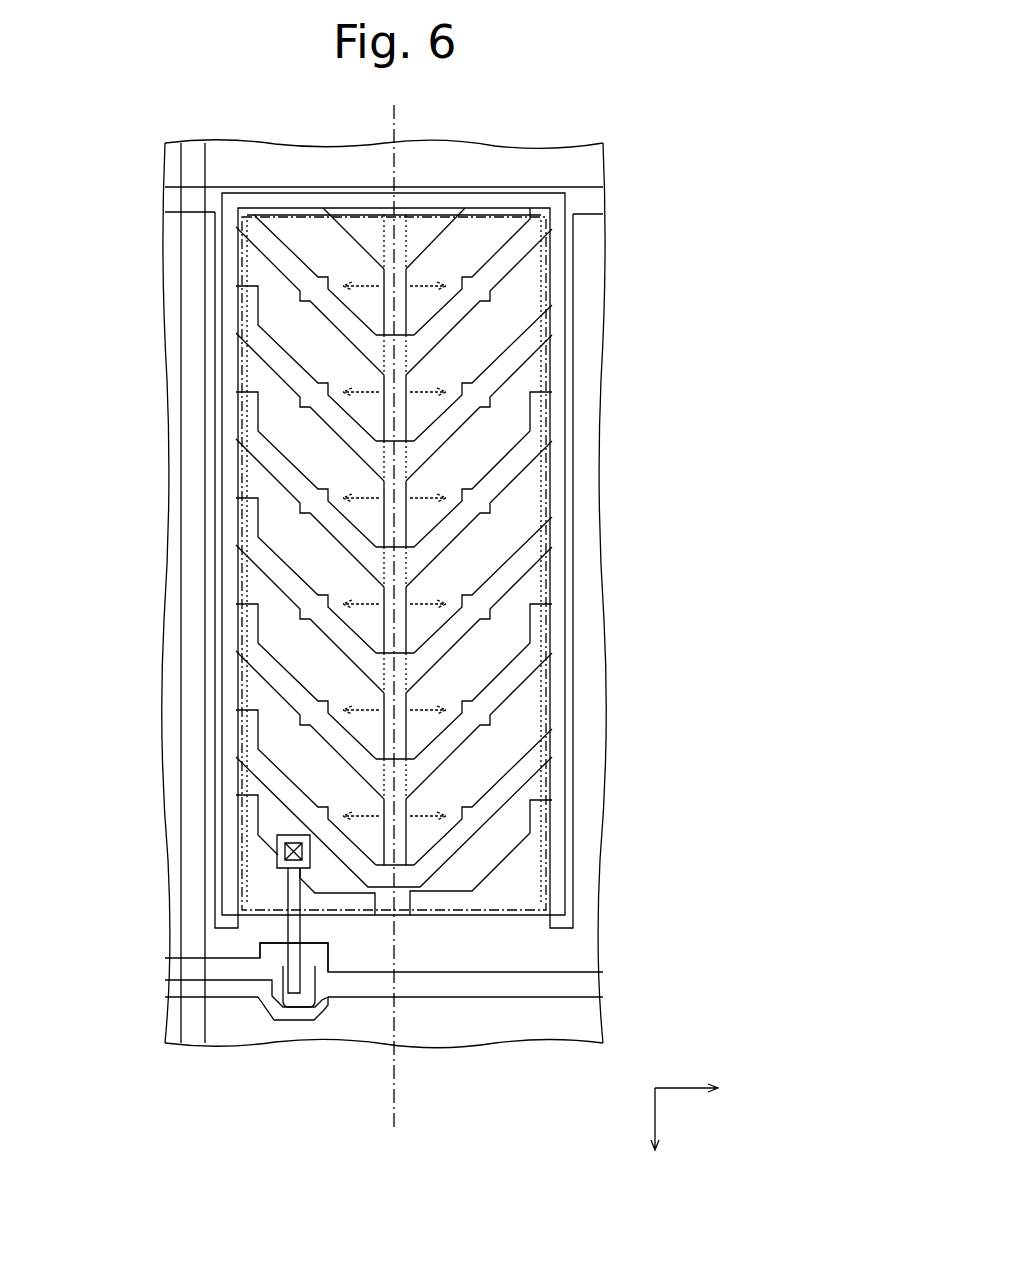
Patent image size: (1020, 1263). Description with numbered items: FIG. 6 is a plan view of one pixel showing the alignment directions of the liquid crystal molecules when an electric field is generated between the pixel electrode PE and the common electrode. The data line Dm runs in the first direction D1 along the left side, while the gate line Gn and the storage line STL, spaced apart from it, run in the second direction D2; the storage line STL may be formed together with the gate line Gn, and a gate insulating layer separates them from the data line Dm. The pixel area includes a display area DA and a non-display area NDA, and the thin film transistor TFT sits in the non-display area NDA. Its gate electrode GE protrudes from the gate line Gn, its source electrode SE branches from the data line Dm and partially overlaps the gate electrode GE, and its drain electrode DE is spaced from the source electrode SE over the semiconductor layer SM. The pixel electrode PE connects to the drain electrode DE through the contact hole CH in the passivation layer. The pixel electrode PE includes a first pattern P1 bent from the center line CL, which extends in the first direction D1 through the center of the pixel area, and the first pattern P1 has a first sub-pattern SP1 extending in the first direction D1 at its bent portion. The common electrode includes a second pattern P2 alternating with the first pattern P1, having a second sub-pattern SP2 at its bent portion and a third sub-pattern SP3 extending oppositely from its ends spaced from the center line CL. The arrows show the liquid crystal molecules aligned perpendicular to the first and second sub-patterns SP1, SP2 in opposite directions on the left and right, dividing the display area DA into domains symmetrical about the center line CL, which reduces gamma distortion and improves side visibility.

The storage line STL is at (586, 200).
The display area DA is at (250, 285).
The data line Dm is at (181, 484).
The first pattern P1 is at (458, 377).
The first sub-pattern SP1 is at (405, 520).
The pixel electrode PE is at (572, 570).
The third sub-pattern SP3 is at (535, 638).
The second pattern P2 is at (458, 677).
The second sub-pattern SP2 is at (405, 800).
The contact hole CH is at (277, 850).
The non-display area NDA is at (568, 945).
The gate line Gn is at (597, 987).
The drain electrode DE is at (284, 976).
The source electrode SE is at (290, 1012).
The semiconductor layer SM is at (322, 1009).
The gate electrode GE is at (317, 1027).
The thin film transistor TFT is at (271, 1012).
The center line CL is at (395, 632).
The first direction D1 is at (659, 1135).
The second direction D2 is at (705, 1089).